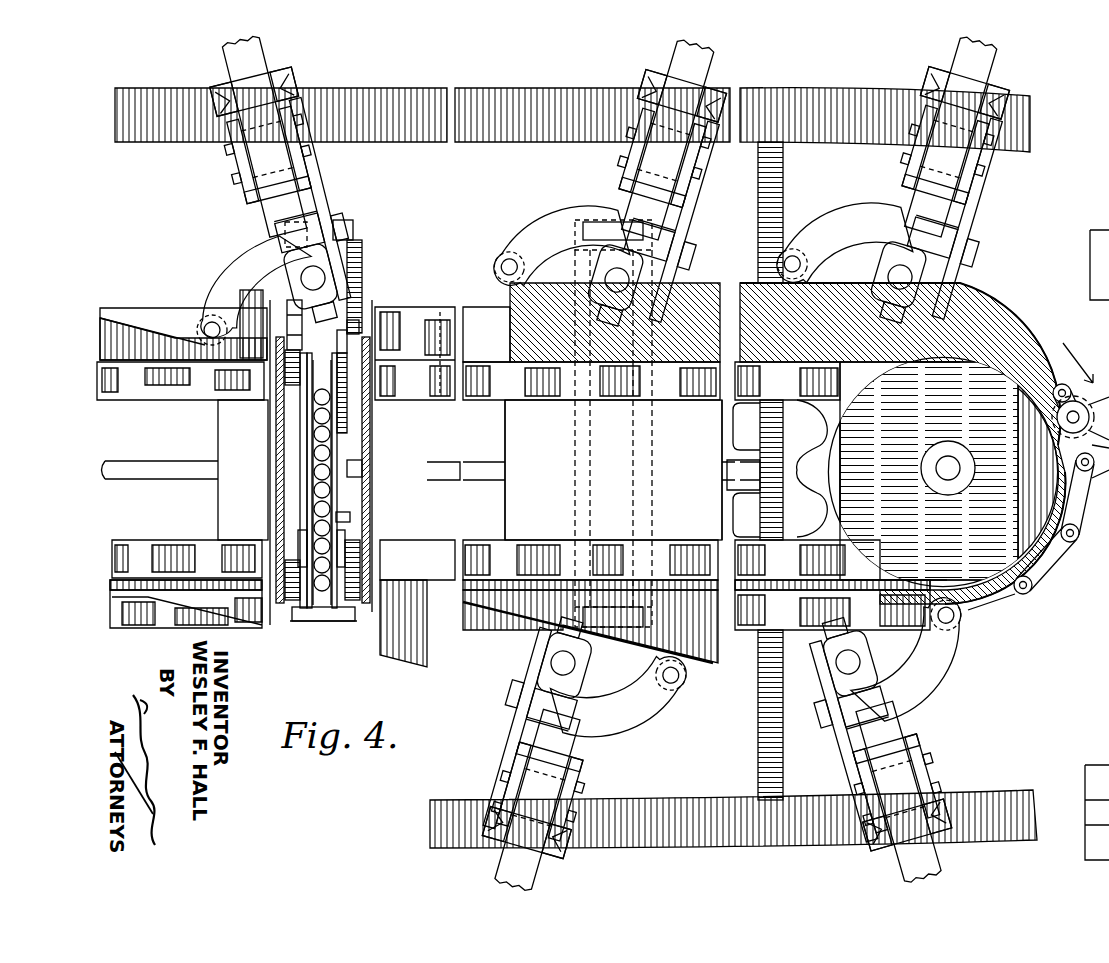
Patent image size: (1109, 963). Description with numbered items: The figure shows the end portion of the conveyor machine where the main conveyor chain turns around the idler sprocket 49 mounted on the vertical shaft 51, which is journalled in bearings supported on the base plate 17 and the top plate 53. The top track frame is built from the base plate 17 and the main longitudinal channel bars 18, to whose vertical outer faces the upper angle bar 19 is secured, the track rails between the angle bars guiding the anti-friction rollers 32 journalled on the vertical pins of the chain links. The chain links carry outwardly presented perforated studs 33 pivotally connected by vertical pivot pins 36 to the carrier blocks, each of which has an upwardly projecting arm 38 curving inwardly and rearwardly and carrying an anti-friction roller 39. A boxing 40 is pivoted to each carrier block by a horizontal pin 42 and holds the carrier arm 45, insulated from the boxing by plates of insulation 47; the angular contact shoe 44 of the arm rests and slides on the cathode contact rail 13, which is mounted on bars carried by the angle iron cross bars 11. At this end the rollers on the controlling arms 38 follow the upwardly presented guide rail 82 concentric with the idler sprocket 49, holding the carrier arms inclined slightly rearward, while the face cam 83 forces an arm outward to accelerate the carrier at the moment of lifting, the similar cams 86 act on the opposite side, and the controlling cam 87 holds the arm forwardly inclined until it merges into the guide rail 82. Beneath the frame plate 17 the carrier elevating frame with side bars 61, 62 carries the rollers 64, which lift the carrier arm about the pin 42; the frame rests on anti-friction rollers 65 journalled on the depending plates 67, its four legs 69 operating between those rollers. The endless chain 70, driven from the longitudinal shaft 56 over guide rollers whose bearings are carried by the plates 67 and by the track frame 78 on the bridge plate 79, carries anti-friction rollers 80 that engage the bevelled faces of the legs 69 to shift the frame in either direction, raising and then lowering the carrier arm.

The angle iron cross bar 11 is at (758, 757).
The cathode contact rail 13 is at (448, 88).
The base plate 17 is at (218, 437).
The main longitudinal channel bar 18 is at (140, 400).
The upper angle bar 19 is at (130, 318).
The anti-friction roller 32 is at (1032, 592).
The perforated stud 33 is at (333, 300).
The vertical pivot pin 36 is at (325, 277).
The arm 38 is at (240, 250).
The anti-friction roller 39 is at (205, 318).
The boxing 40 is at (312, 190).
The horizontal pin 42 is at (340, 224).
The contact shoe 44 is at (295, 75).
The carrier arm 45 is at (228, 58).
The plates of insulation 47 is at (258, 153).
The idler sprocket 49 is at (1060, 566).
The vertical shaft 51 is at (951, 462).
The top plate 53 is at (929, 471).
The longitudinal shaft 56 is at (160, 480).
The side bar 61 is at (575, 448).
The side bar 62 is at (652, 448).
The roller 64 is at (353, 232).
The anti-friction roller 65 is at (340, 343).
The depending plate 67 is at (277, 443).
The leg 69 is at (302, 318).
The endless chain 70 is at (310, 417).
The track frame 78 is at (340, 413).
The bridge plate 79 is at (362, 467).
The anti-friction roller 80 is at (350, 517).
The guide rail 82 is at (1030, 520).
The face cam 83 is at (398, 660).
The cam 86 is at (435, 315).
The controlling cam 87 is at (1005, 283).